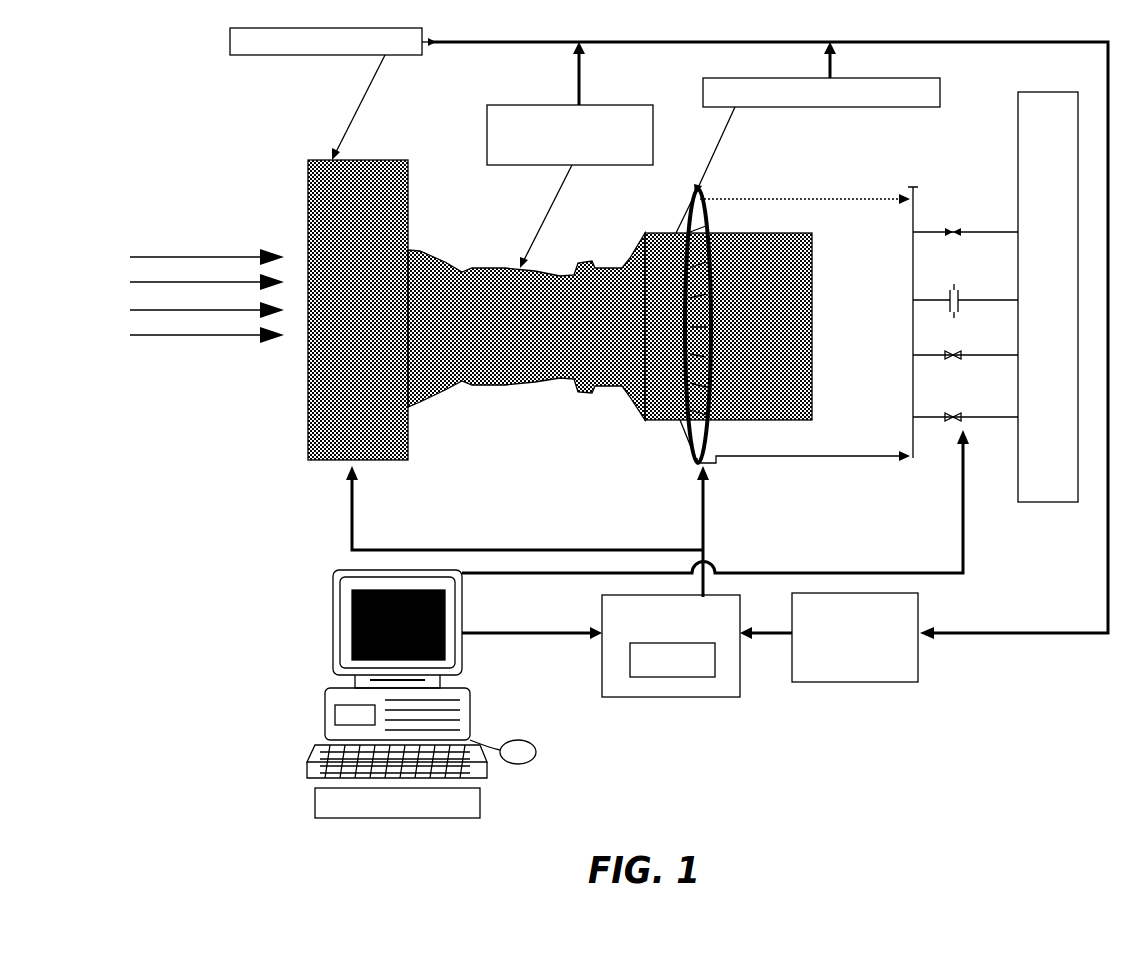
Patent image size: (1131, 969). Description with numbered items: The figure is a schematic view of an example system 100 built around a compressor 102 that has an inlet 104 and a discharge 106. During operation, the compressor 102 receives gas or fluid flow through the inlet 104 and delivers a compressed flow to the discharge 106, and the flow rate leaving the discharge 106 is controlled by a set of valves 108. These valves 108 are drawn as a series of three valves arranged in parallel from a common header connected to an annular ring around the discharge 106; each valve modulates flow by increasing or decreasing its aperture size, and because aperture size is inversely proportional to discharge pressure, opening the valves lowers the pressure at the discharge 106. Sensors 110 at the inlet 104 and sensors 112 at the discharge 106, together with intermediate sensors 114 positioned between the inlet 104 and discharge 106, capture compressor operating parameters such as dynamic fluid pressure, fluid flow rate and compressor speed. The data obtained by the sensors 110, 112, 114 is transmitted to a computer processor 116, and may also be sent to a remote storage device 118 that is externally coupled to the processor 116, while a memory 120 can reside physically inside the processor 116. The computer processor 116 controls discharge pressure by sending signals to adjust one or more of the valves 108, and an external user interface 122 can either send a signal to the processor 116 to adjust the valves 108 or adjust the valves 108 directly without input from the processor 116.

The system 100 is at (190, 58).
The compressor 102 is at (560, 365).
The inlet 104 is at (408, 283).
The discharge 106 is at (795, 305).
The valves 108 is at (957, 206).
The sensors 110 is at (326, 94).
The sensors 112 is at (942, 80).
The intermediate sensors 114 is at (482, 106).
The computer processor 116 is at (607, 688).
The remote storage device 118 is at (893, 677).
The memory 120 is at (715, 677).
The external user interface 122 is at (487, 774).